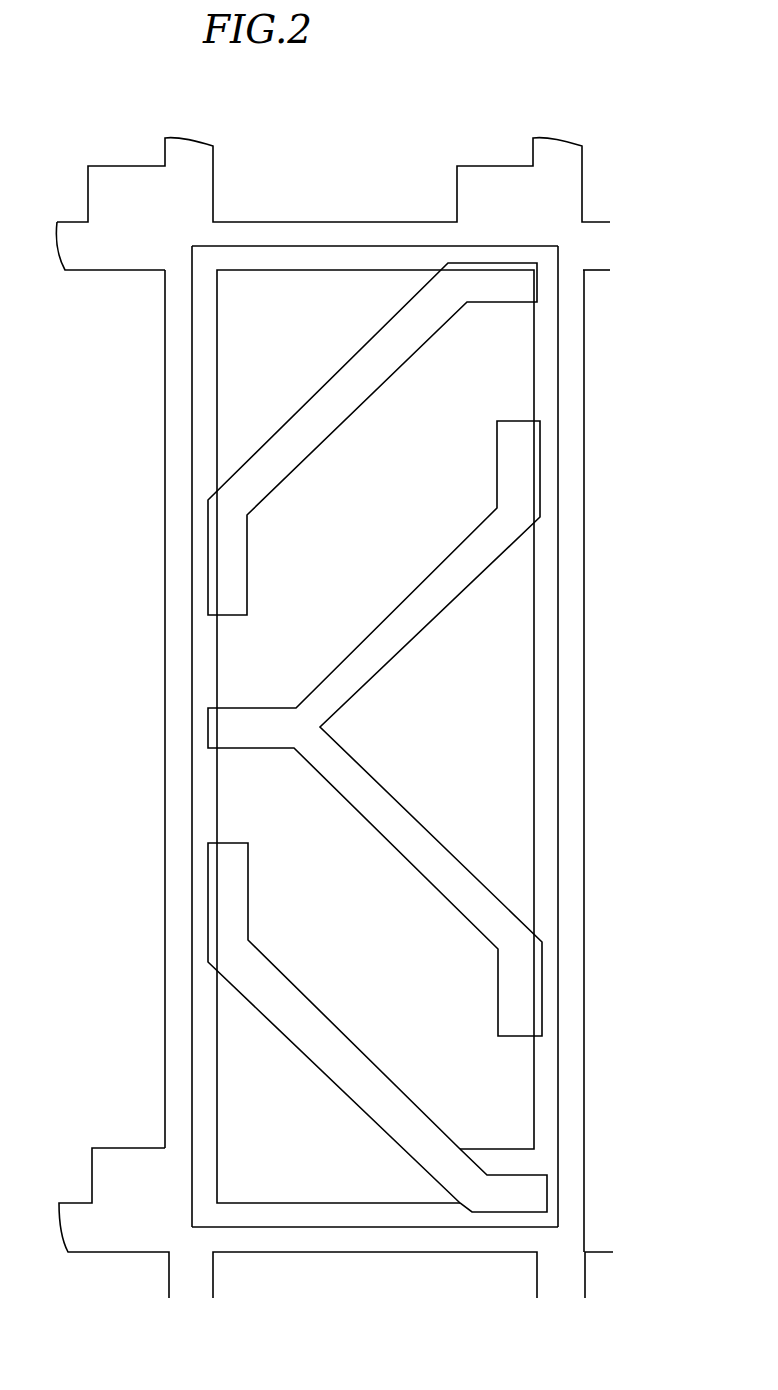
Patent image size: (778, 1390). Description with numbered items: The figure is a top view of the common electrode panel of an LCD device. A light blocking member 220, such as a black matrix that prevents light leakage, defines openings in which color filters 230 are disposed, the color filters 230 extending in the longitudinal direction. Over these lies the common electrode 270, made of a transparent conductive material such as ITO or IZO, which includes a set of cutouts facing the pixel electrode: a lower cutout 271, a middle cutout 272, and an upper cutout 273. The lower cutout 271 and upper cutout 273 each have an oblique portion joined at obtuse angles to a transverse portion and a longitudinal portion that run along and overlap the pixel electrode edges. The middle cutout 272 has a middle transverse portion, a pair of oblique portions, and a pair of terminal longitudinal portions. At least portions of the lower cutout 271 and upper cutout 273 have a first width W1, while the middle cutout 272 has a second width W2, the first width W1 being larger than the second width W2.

The light blocking member 220 is at (573, 1084).
The color filter 230 is at (379, 1227).
The common electrode 270 is at (498, 709).
The lower cutout 271 is at (371, 1050).
The middle cutout 272 is at (389, 853).
The upper cutout 273 is at (392, 377).
The first width W1 is at (295, 413).
The second width W2 is at (409, 595).